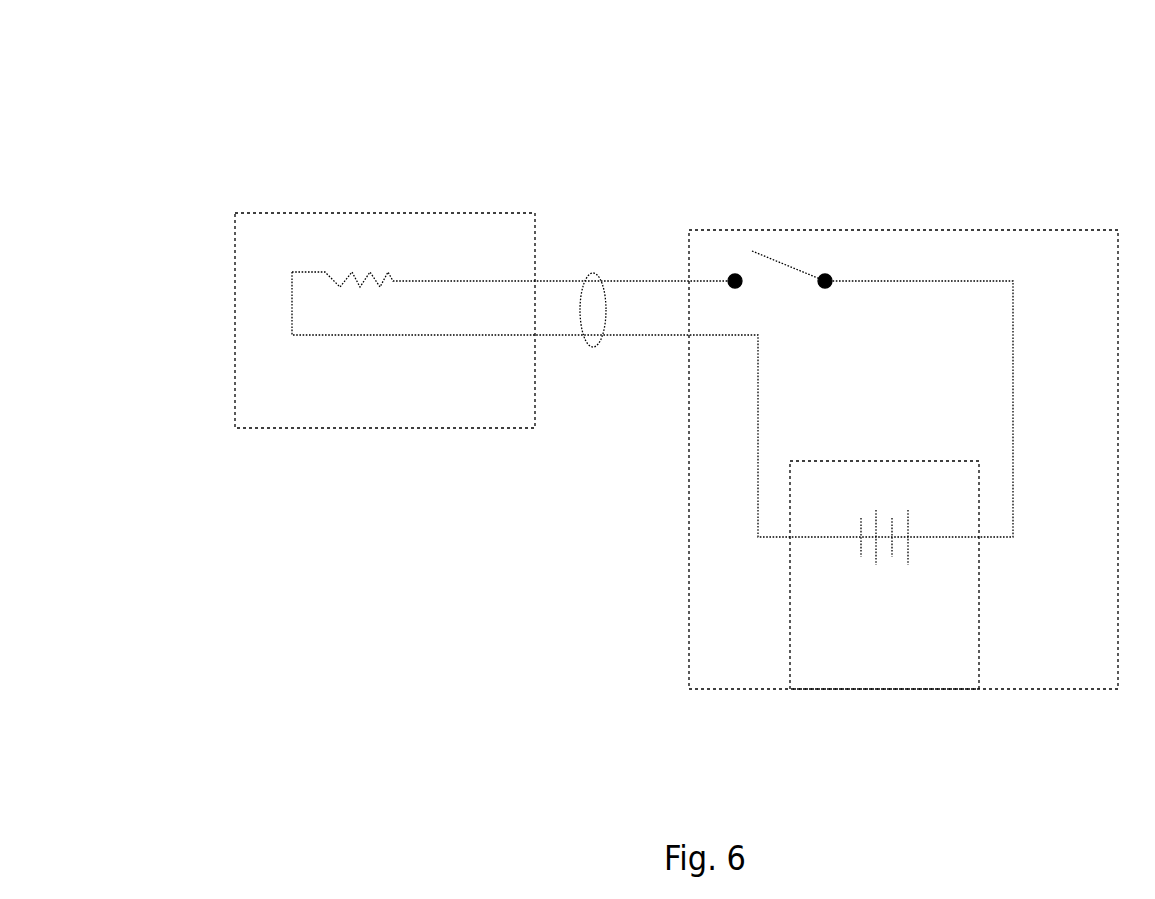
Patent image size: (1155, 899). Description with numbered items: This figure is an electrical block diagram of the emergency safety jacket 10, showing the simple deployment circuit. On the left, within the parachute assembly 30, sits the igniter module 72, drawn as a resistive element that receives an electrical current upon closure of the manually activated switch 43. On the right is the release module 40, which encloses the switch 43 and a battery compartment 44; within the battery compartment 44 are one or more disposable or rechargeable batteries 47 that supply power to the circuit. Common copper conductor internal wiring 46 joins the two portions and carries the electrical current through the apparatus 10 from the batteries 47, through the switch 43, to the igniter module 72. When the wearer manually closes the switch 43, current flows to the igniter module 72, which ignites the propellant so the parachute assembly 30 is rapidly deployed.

The emergency safety jacket 10 is at (214, 121).
The parachute assembly 30 is at (402, 213).
The igniter module 72 is at (345, 275).
The internal wiring 46 is at (597, 275).
The release module 40 is at (688, 595).
The manually activated switch 43 is at (798, 262).
The battery compartment 44 is at (789, 632).
The batteries 47 is at (908, 543).